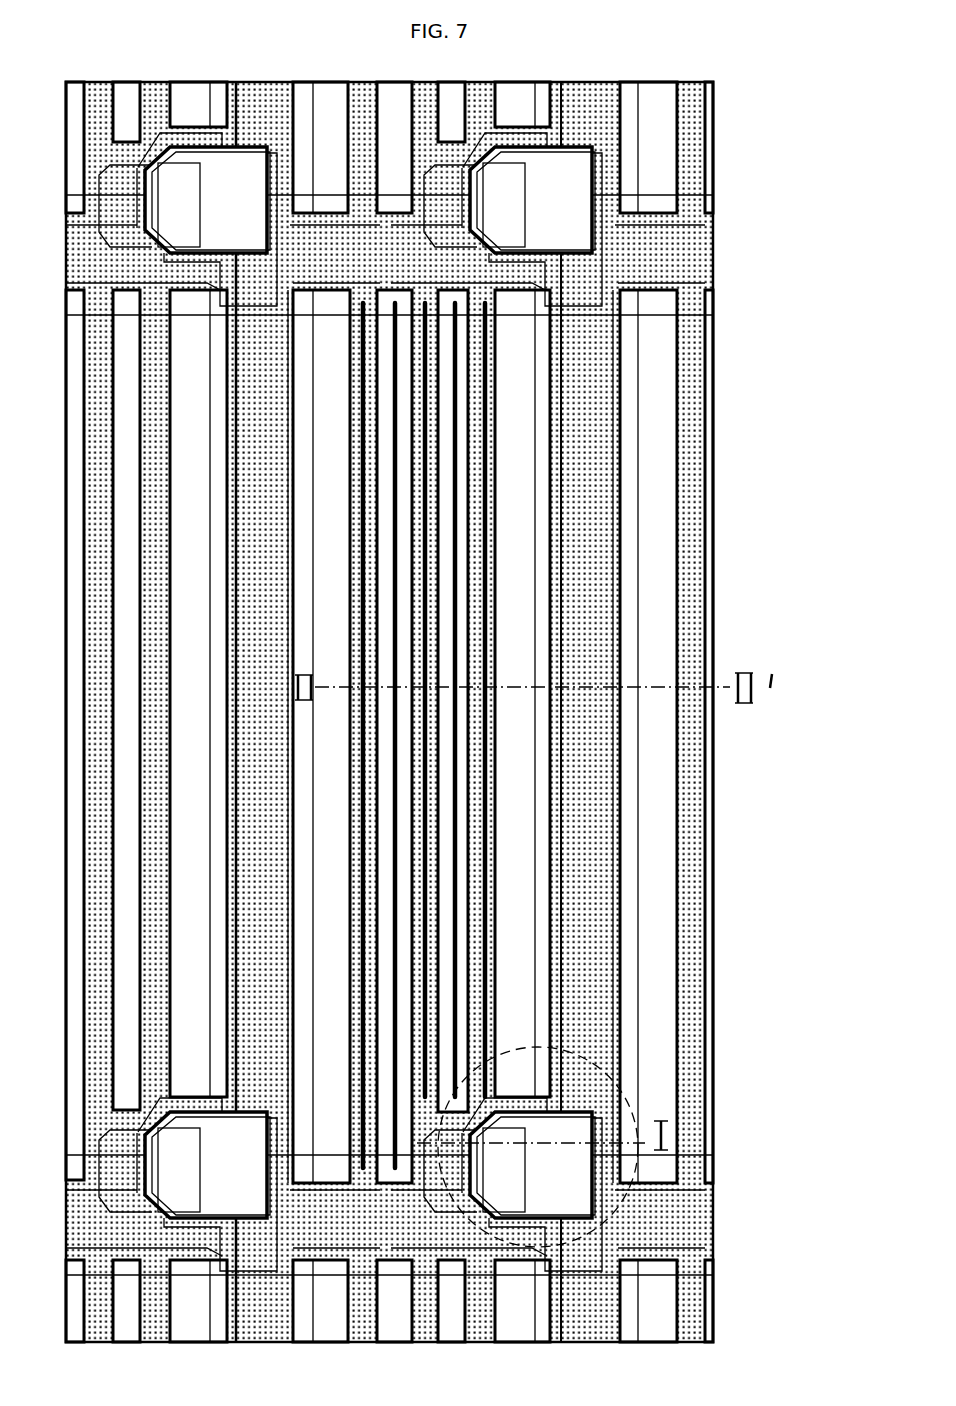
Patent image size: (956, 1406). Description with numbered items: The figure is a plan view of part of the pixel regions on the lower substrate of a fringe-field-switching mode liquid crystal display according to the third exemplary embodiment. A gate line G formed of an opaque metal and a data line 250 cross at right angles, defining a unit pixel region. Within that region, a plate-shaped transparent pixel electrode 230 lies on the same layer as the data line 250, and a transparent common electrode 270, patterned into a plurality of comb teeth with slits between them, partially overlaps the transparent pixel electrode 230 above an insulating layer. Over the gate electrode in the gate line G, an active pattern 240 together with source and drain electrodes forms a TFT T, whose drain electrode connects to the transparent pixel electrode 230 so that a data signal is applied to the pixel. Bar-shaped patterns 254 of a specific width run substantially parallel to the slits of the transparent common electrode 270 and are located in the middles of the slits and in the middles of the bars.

The transparent pixel electrode 230 is at (545, 930).
The active pattern 240 is at (560, 1243).
The data line 250 is at (615, 625).
The bar-shaped patterns 254 is at (490, 432).
The transparent common electrode 270 is at (628, 805).
The TFT T is at (648, 1101).
The gate line G is at (657, 1277).